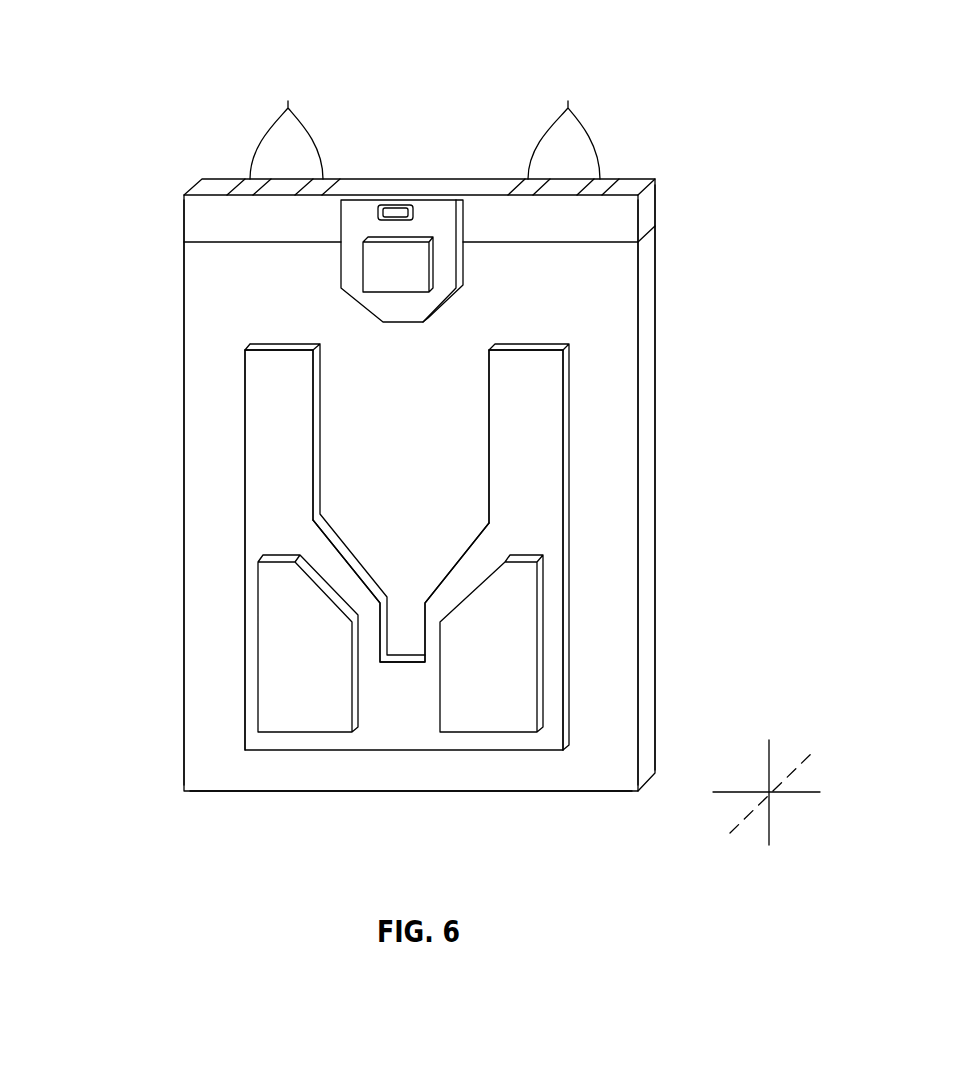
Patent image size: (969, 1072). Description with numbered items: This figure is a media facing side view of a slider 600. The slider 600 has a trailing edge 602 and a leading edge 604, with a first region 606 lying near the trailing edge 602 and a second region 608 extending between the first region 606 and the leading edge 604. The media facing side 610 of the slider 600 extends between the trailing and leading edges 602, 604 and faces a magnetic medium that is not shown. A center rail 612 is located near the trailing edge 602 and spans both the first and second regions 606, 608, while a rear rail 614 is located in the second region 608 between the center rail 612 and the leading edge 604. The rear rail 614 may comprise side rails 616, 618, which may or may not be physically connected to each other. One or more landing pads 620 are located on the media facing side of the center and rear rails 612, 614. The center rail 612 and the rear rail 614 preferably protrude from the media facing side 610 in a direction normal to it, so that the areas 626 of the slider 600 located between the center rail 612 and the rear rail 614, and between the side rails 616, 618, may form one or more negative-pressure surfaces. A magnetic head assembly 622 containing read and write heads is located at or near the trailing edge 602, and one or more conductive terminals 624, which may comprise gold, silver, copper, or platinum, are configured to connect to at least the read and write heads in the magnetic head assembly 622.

The slider 600 is at (166, 61).
The trailing edge 602 is at (220, 165).
The leading edge 604 is at (603, 797).
The first region 606 is at (648, 212).
The second region 608 is at (645, 362).
The media facing side 610 is at (199, 776).
The center rail 612 is at (458, 260).
The rear rail 614 is at (568, 723).
The side rail 616 is at (243, 447).
The side rail 618 is at (544, 438).
The landing pad 620 is at (377, 268).
The magnetic head assembly 622 is at (390, 213).
The conductive terminal 624 is at (425, 131).
The area 626 is at (391, 490).